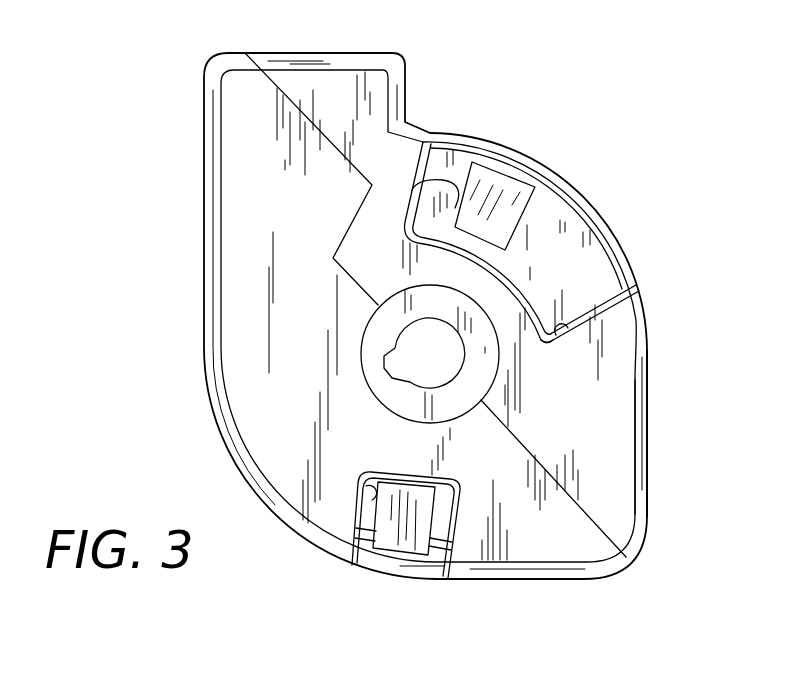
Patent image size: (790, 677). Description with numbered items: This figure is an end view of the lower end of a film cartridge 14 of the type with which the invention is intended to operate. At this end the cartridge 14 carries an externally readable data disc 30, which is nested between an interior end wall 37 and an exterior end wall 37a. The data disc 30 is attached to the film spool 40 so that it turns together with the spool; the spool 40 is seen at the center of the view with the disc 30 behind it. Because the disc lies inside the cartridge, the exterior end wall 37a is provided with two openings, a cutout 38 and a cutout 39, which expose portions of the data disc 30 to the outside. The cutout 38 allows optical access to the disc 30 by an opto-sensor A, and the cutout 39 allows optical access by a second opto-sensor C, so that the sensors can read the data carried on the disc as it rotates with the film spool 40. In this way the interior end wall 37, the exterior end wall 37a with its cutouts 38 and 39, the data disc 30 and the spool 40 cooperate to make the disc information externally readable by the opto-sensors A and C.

The cartridge 14 is at (203, 327).
The data disc 30 is at (416, 192).
The interior end wall 37 is at (592, 268).
The exterior end wall 37a is at (623, 336).
The cutout 38 is at (545, 342).
The cutout 39 is at (367, 477).
The film spool 40 is at (440, 371).
The opto-sensor A is at (488, 182).
The opto-sensor C is at (394, 535).